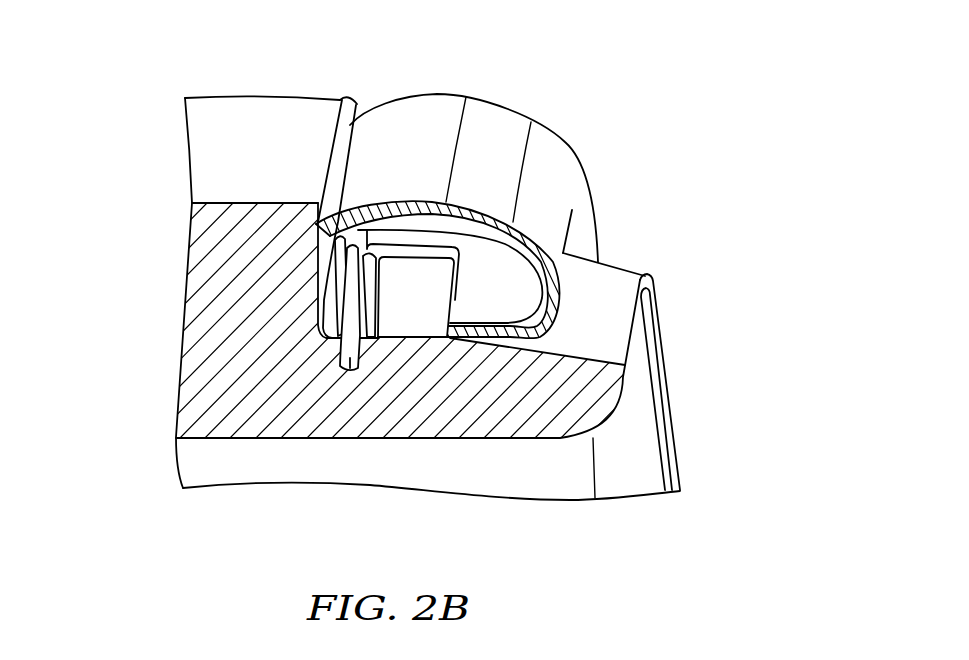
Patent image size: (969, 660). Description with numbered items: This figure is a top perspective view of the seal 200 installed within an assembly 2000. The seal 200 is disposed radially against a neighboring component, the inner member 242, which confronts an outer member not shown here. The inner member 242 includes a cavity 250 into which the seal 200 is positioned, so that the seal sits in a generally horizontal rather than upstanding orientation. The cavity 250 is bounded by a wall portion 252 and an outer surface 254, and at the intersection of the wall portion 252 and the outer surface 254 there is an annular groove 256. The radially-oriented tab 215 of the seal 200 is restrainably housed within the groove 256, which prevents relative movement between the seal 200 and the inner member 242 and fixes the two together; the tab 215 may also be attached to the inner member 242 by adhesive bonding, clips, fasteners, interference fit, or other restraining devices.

The assembly 2000 is at (708, 68).
The radially-oriented tab 215 is at (367, 270).
The wall portion 252 is at (352, 103).
The seal 200 is at (553, 131).
The inner member 242 is at (640, 273).
The cavity 250 is at (416, 297).
The outer surface 254 is at (398, 340).
The annular groove 256 is at (350, 357).